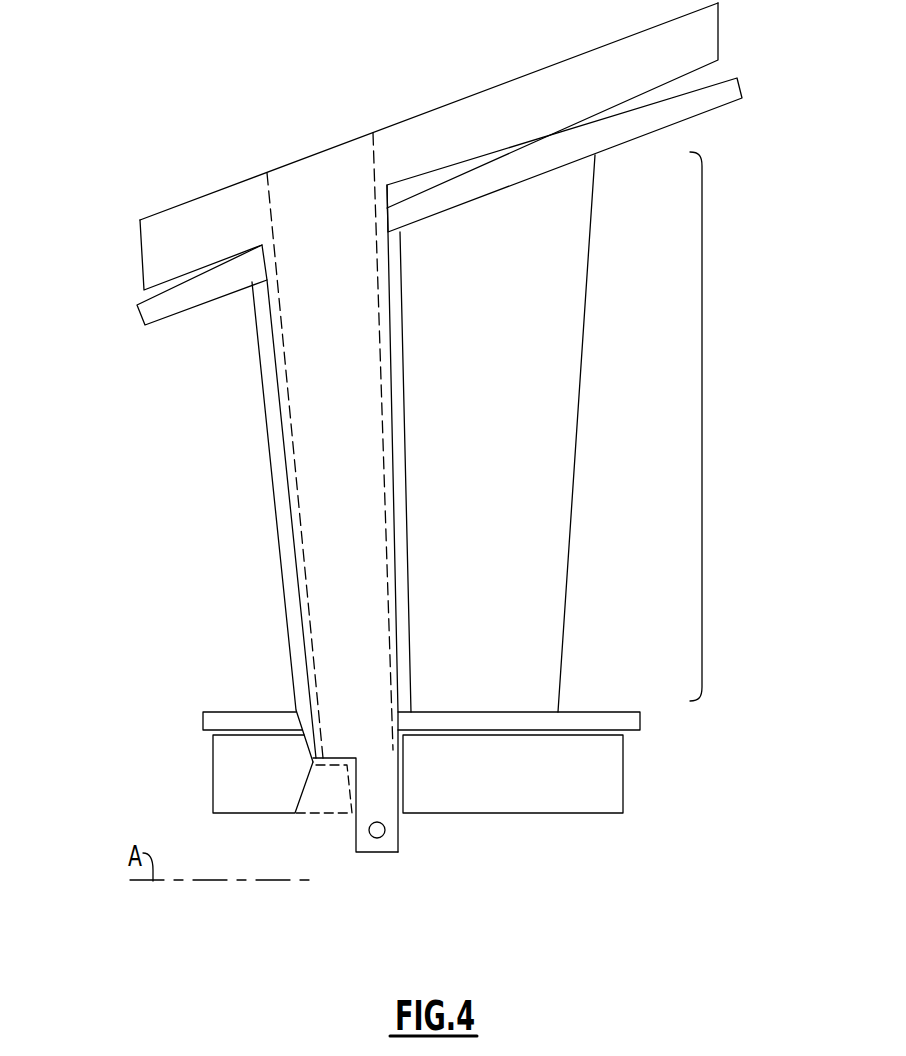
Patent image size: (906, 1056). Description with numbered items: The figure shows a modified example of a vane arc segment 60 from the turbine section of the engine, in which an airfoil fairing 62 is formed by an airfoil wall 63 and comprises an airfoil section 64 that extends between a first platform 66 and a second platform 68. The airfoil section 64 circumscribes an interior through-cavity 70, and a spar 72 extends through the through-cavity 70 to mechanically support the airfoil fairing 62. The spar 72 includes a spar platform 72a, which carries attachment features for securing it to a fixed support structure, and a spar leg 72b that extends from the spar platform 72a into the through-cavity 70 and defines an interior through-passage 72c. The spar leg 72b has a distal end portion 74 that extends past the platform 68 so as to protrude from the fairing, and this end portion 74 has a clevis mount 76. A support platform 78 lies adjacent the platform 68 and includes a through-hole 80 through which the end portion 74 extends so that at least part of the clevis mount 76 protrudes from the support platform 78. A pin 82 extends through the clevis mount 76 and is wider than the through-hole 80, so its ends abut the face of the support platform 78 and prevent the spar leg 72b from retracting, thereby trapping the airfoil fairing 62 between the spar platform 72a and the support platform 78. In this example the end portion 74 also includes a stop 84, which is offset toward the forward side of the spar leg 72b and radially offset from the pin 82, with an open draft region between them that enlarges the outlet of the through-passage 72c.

The vane arc segment 60 is at (124, 716).
The airfoil fairing 62 is at (572, 658).
The airfoil wall 63 is at (554, 395).
The airfoil section 64 is at (702, 407).
The first platform 66 is at (717, 95).
The second platform 68 is at (627, 720).
The through-cavity 70 is at (285, 543).
The spar 72 is at (290, 158).
The spar platform 72a is at (522, 95).
The spar leg 72b is at (283, 457).
The through-passage 72c is at (374, 452).
The distal end portion 74 is at (398, 753).
The clevis mount 76 is at (413, 832).
The support platform 78 is at (598, 787).
The through-hole 80 is at (400, 784).
The pin 82 is at (375, 838).
The stop 84 is at (323, 775).